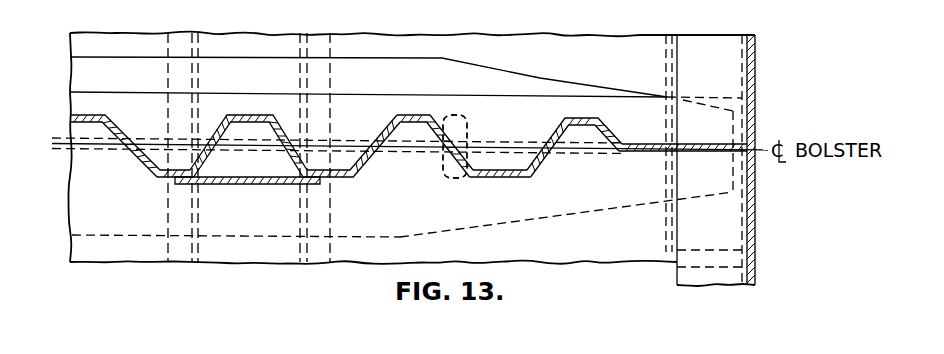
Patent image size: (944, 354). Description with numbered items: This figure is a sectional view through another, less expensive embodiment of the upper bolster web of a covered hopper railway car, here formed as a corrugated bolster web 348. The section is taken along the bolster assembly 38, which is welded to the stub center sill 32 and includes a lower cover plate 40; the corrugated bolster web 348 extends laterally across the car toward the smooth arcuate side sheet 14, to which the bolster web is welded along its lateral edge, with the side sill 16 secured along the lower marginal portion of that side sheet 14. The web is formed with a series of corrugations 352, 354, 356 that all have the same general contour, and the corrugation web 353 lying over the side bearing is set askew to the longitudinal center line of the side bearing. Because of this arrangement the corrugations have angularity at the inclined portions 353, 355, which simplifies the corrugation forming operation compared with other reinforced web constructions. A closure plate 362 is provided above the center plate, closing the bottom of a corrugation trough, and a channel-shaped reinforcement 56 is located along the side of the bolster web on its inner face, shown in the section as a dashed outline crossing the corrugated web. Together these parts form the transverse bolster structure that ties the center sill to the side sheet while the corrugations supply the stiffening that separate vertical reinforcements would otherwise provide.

The arcuate side sheet 14 is at (757, 58).
The side sill 16 is at (702, 250).
The stub center sill 32 is at (188, 240).
The bolster assembly 38 is at (590, 78).
The lower cover plate 40 is at (641, 208).
The channel-shaped reinforcement 56 is at (470, 122).
The corrugated bolster web 348 is at (141, 176).
The corrugation 352 is at (265, 115).
The corrugation web 353 is at (126, 136).
The corrugation 354 is at (412, 117).
The angular portion 355 is at (379, 139).
The corrugation 356 is at (563, 117).
The closure plate 362 is at (240, 184).